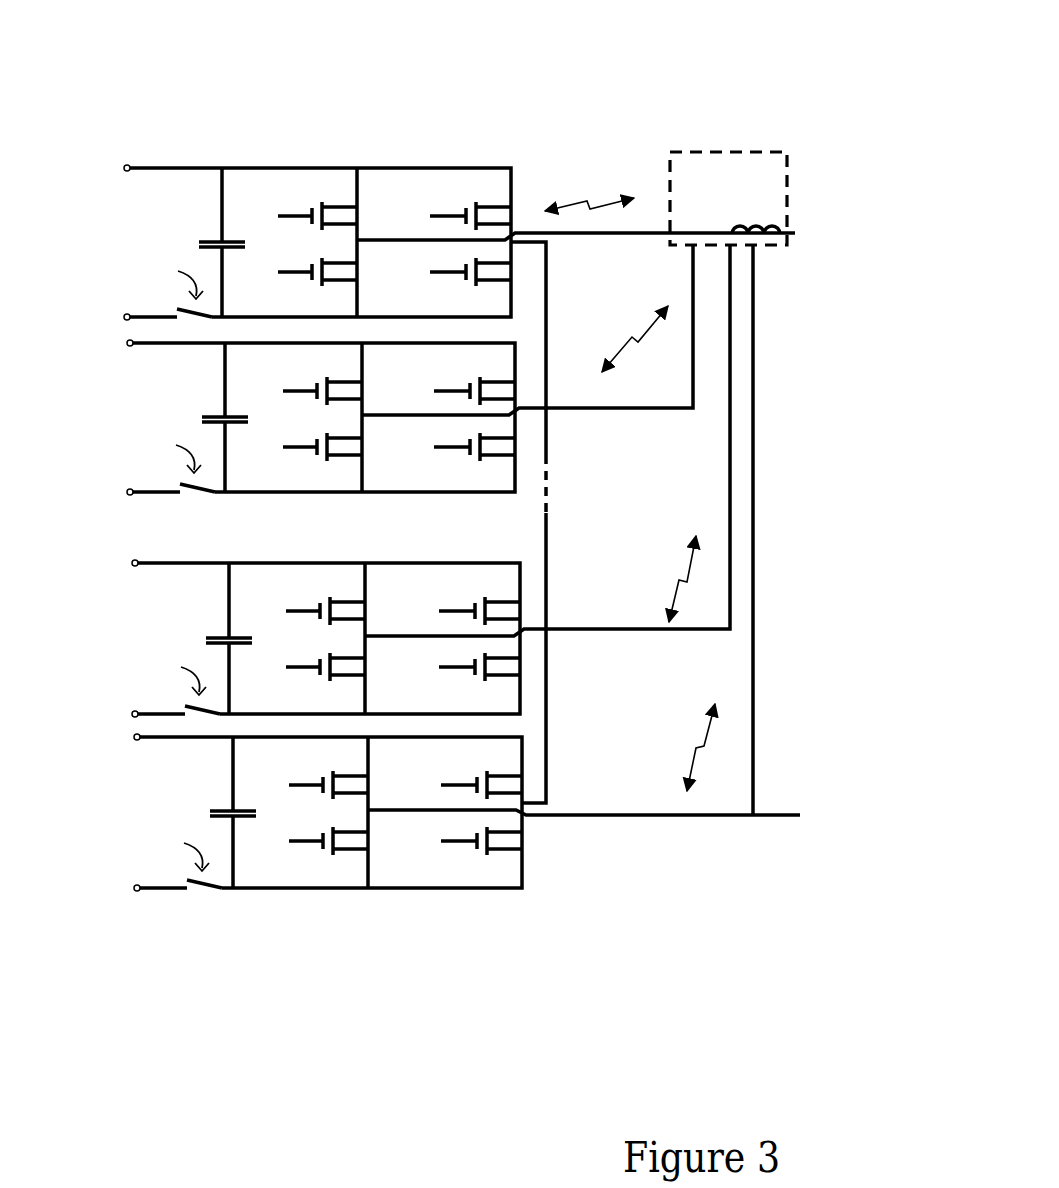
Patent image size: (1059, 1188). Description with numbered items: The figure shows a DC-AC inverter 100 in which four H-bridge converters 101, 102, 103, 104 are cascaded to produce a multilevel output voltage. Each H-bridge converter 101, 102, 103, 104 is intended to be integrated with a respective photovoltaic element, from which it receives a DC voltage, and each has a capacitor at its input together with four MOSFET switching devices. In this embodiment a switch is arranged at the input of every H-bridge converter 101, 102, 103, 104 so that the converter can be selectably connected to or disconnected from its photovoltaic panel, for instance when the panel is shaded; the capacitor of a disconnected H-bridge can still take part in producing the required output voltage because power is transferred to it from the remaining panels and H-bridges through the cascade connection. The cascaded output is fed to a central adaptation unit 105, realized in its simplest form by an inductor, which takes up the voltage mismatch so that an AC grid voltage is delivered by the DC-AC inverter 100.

The DC-AC inverter 100 is at (578, 60).
The H-bridge converter 101 is at (403, 152).
The H-bridge converter 102 is at (381, 506).
The H-bridge converter 103 is at (379, 548).
The H-bridge converter 104 is at (395, 904).
The central adaptation unit 105 is at (688, 150).